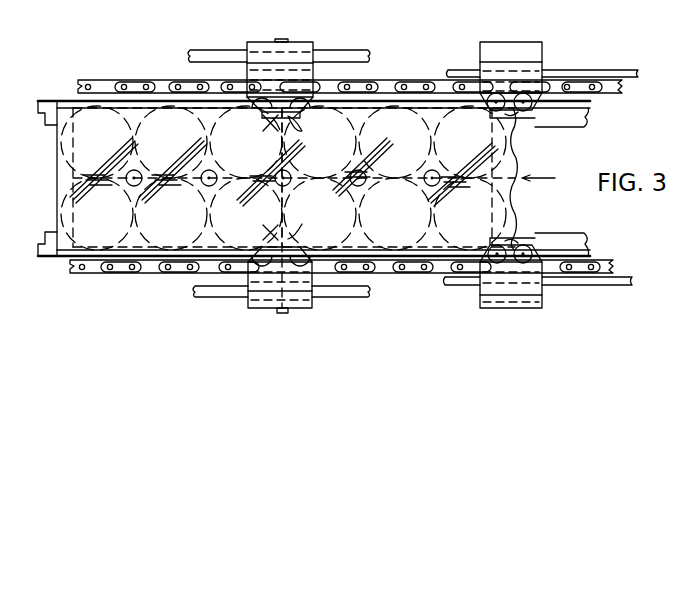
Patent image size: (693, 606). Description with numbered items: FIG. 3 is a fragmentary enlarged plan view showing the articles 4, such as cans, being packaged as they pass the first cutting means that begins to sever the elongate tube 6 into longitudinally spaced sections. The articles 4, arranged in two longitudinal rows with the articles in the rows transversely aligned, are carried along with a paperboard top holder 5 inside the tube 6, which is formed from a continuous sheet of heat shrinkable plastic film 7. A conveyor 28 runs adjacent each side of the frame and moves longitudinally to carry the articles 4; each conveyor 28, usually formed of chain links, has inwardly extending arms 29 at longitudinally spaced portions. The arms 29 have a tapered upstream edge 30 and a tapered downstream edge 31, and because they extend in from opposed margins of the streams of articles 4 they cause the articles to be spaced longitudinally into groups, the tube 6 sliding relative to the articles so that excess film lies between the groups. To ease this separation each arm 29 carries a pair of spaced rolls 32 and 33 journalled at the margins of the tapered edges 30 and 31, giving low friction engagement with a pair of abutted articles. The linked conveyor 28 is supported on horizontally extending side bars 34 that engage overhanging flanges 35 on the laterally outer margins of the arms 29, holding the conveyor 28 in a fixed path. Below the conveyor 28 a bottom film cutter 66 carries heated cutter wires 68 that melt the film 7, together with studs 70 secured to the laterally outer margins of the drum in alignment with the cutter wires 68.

The articles 4 is at (68, 178).
The top holder 5 is at (60, 214).
The tube 6 is at (49, 149).
The heat shrinkable plastic film 7 is at (64, 223).
The conveyor 28 is at (415, 81).
The arms 29 is at (314, 60).
The upstream edge 30 is at (262, 110).
The downstream edge 31 is at (300, 112).
The roll 32 is at (268, 123).
The roll 33 is at (295, 122).
The side bars 34 is at (606, 70).
The overhanging flanges 35 is at (508, 62).
The bottom film cutter 66 is at (230, 50).
The cutter wires 68 is at (302, 172).
The studs 70 is at (284, 41).